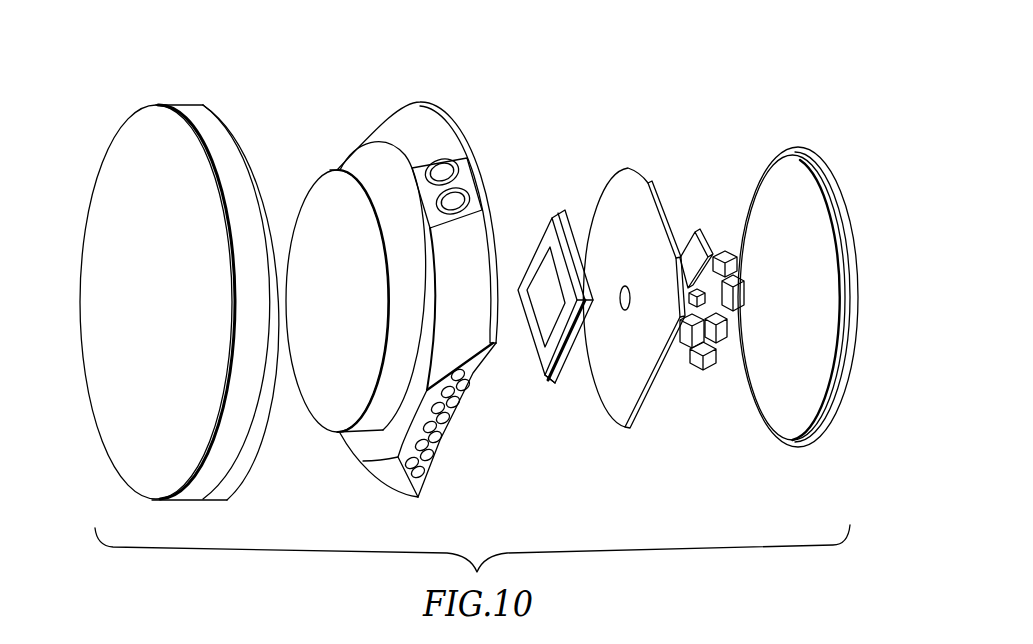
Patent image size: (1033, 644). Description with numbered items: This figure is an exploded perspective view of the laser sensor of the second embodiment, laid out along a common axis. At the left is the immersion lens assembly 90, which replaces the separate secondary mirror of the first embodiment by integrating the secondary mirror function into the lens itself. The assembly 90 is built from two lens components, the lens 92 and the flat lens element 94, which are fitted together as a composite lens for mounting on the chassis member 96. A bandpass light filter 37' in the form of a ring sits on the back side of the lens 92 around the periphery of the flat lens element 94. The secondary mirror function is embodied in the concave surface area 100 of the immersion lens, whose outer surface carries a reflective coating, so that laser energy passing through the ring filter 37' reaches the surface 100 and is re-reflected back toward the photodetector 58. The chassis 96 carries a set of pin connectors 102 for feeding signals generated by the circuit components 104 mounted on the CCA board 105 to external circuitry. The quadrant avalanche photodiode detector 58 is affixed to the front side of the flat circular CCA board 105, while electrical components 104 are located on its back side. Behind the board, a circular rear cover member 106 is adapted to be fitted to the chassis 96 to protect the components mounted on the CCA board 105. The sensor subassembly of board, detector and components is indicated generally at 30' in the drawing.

The immersion lens assembly 90 is at (327, 96).
The concave surface area 100 is at (113, 140).
The bandpass light filter 37' is at (258, 302).
The lens component 92 is at (183, 502).
The flat lens element 94 is at (333, 434).
The chassis member 96 is at (447, 114).
The pin connectors 102 is at (437, 427).
The sensor module 30' is at (649, 253).
The quadrant avalanche photodiode detector 58 is at (555, 382).
The CCA board 105 is at (649, 177).
The circuit components 104 is at (700, 393).
The circular rear cover member 106 is at (806, 147).